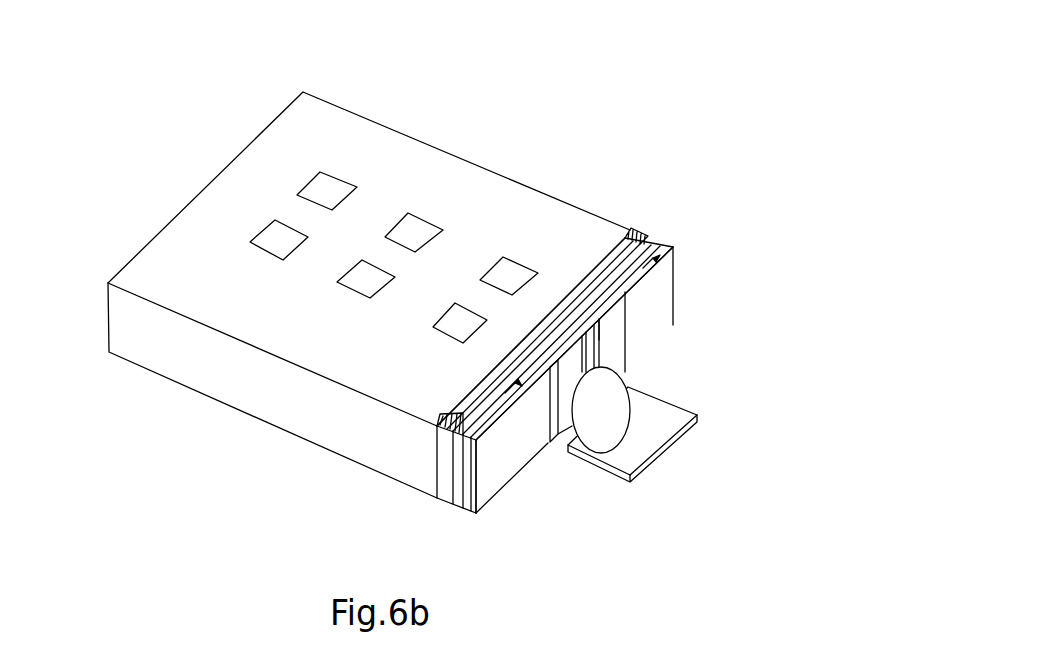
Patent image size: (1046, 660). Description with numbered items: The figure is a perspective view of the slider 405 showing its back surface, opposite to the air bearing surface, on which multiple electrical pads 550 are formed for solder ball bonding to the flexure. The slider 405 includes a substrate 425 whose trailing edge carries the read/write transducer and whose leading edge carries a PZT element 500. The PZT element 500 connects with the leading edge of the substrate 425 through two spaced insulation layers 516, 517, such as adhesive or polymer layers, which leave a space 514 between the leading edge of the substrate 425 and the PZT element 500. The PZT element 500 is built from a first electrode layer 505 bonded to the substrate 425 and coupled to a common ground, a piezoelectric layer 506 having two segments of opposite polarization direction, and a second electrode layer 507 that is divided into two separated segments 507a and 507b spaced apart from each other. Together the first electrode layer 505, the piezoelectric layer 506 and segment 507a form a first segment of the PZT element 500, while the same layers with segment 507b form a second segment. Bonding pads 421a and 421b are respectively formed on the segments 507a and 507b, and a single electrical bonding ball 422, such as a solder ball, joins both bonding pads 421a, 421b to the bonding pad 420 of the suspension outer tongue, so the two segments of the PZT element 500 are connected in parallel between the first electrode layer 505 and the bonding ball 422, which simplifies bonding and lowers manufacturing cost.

The slider 405 is at (127, 54).
The substrate 425 is at (215, 360).
The electrical pads 550 is at (272, 233).
The PZT element 500 is at (823, 126).
The first electrode layer 505 is at (647, 237).
The piezoelectric layer 506 is at (655, 247).
The second electrode layer 507 is at (673, 247).
The segment of the second electrode layer 507a is at (652, 313).
The segment of the second electrode layer 507b is at (492, 450).
The space 514 is at (598, 307).
The insulation layer 516 is at (437, 426).
The insulation layer 517 is at (622, 225).
The bonding pad 420 is at (648, 420).
The bonding pad 421a is at (613, 350).
The bonding pad 421b is at (563, 415).
The electrical bonding ball 422 is at (615, 423).